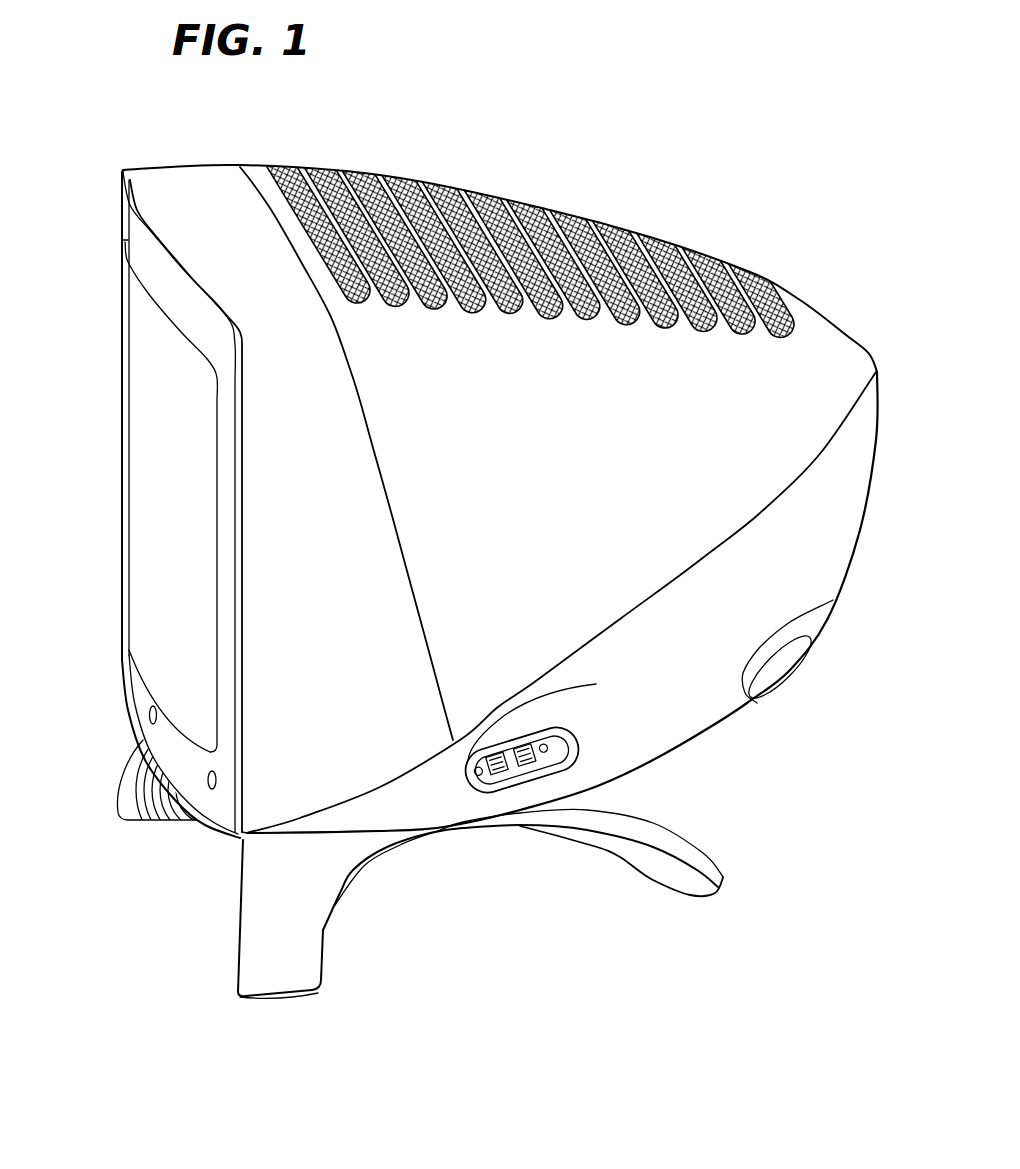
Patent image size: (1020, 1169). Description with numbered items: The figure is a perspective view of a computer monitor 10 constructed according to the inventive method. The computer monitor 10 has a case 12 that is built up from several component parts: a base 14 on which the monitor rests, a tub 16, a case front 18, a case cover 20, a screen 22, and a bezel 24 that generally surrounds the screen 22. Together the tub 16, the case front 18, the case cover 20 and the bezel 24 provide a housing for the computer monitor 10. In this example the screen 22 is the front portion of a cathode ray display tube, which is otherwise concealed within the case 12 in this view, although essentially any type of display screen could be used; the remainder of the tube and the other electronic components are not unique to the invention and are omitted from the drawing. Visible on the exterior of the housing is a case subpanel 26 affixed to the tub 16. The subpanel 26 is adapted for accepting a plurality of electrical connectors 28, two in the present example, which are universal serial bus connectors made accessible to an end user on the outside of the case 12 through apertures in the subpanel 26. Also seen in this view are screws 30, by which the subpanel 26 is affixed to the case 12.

The computer monitor 10 is at (150, 940).
The case 12 is at (836, 728).
The base 14 is at (307, 927).
The tub 16 is at (738, 615).
The case front 18 is at (352, 644).
The case cover 20 is at (625, 433).
The screen 22 is at (192, 497).
The bezel 24 is at (130, 681).
The case subpanel 26 is at (572, 746).
The electrical connectors 28 is at (497, 776).
The screws 30 is at (543, 746).